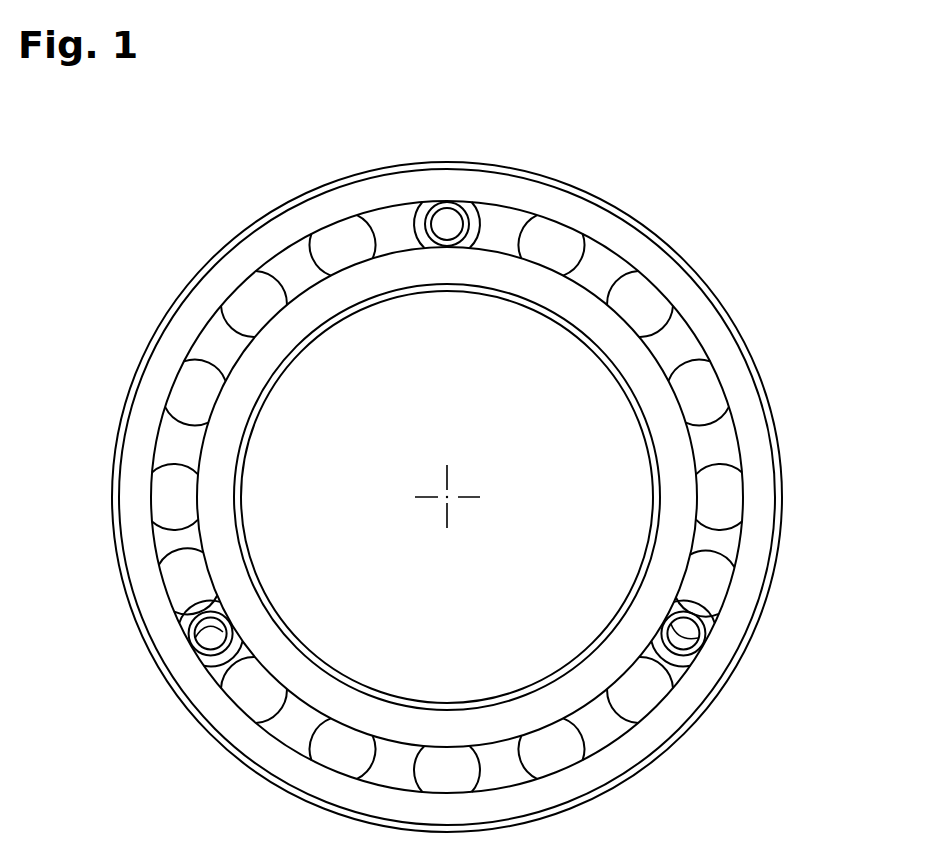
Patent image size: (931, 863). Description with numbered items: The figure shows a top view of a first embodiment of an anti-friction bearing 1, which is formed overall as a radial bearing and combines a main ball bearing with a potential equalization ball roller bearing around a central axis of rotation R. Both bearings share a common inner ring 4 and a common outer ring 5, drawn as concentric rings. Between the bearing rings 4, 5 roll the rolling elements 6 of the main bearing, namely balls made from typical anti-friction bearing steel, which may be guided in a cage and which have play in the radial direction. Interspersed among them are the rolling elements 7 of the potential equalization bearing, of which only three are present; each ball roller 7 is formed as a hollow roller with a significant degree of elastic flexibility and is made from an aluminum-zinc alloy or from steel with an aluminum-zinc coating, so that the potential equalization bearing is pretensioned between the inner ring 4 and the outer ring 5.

The anti-friction bearing 1 is at (731, 206).
The common inner ring 4 is at (240, 455).
The common outer ring 5 is at (710, 287).
The rolling elements 6 is at (699, 392).
The rolling elements 7 is at (684, 643).
The axis of rotation R is at (444, 501).